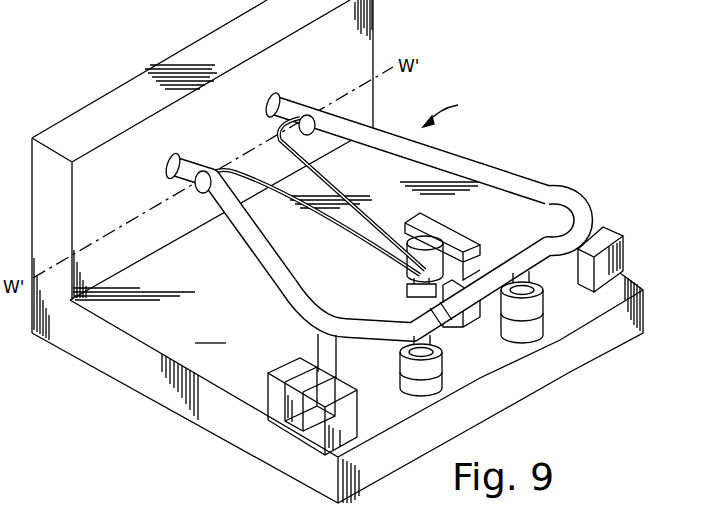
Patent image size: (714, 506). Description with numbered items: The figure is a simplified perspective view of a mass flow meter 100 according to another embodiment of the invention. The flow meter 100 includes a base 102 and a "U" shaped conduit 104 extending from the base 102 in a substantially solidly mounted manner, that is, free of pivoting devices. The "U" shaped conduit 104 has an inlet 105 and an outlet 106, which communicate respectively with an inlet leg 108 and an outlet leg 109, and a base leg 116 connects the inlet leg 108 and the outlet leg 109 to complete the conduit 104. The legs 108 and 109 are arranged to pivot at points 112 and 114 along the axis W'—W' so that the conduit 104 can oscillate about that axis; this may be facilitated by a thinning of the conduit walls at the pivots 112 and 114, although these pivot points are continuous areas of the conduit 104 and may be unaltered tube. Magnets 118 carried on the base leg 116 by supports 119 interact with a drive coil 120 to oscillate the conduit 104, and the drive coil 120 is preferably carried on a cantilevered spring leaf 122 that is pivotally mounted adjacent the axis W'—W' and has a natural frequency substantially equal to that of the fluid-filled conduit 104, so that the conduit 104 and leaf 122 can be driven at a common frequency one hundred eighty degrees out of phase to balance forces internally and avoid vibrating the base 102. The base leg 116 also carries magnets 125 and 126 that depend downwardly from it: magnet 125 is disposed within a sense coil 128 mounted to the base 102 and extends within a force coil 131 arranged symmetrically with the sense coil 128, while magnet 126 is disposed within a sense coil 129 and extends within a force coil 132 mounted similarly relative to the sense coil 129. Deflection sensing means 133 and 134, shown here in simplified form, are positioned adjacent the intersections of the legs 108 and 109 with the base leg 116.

The mass flow meter 100 is at (457, 113).
The base 102 is at (337, 251).
The U shaped conduit 104 is at (268, 272).
The inlet 105 is at (165, 165).
The outlet 106 is at (288, 105).
The inlet leg 108 is at (248, 238).
The outlet leg 109 is at (470, 160).
The pivot point 112 is at (195, 182).
The pivot point 114 is at (316, 121).
The base leg 116 is at (434, 320).
The magnets 118 is at (405, 290).
The supports 119 is at (448, 236).
The drive coil 120 is at (407, 247).
The cantilevered spring leaf 122 is at (320, 182).
The magnet 125 is at (411, 342).
The magnet 126 is at (535, 282).
The sense coil 128 is at (429, 389).
The sense coil 129 is at (512, 340).
The force coil 131 is at (408, 368).
The force coil 132 is at (543, 324).
The deflection sensing means 133 is at (290, 368).
The deflection sensing means 134 is at (597, 232).